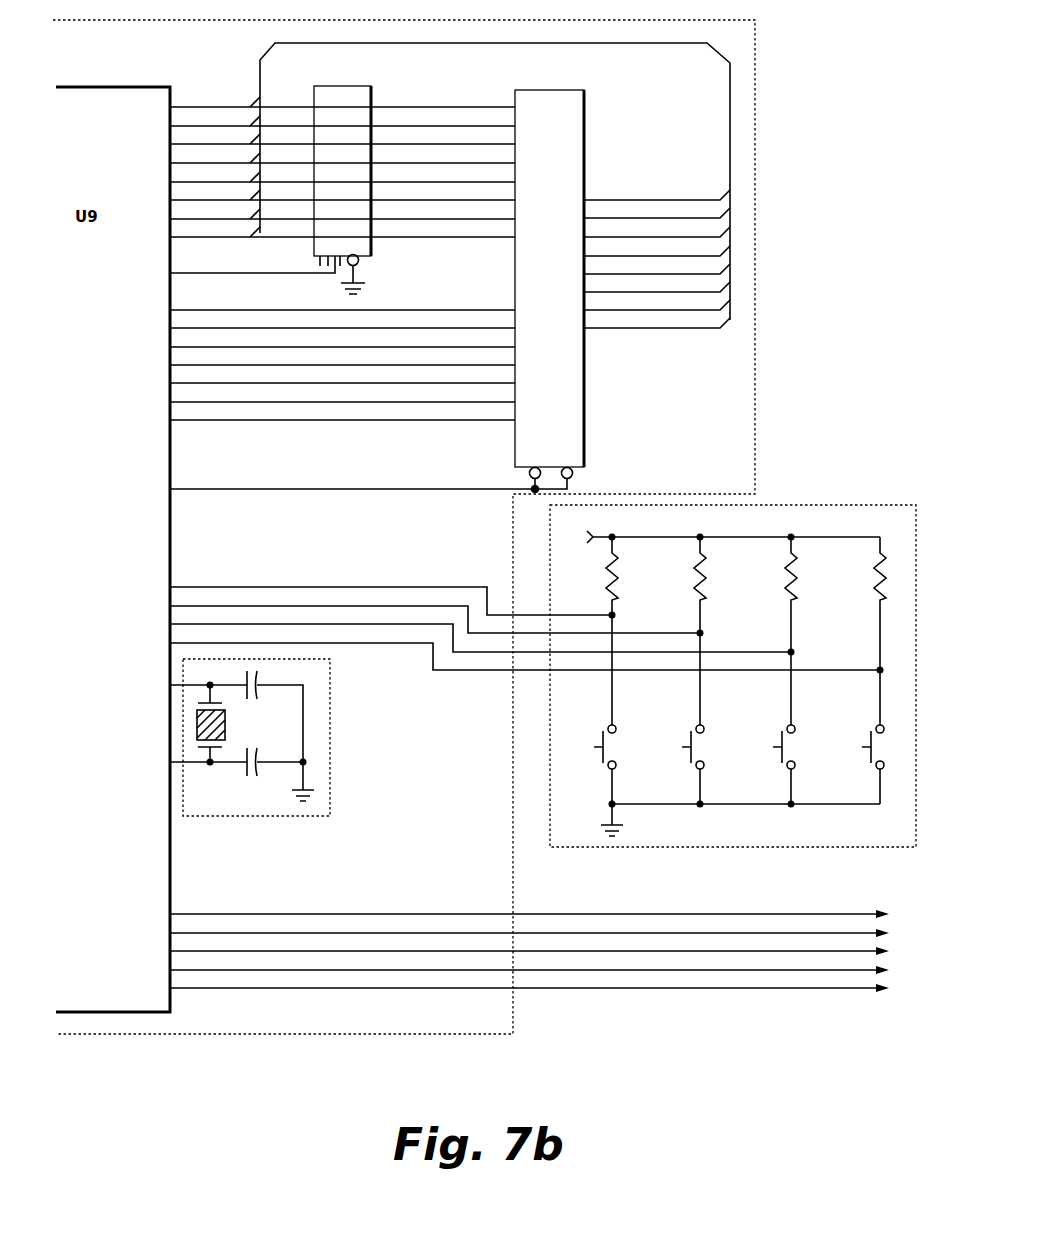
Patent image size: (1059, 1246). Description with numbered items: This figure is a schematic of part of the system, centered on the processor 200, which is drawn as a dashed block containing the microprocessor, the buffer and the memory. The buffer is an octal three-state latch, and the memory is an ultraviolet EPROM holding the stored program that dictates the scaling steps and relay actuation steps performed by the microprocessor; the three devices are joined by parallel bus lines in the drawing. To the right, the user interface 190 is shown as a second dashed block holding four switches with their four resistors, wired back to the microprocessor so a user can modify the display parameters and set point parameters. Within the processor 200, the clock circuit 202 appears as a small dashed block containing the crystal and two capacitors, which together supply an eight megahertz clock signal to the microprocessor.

The processor 200 is at (755, 95).
The user interface 190 is at (800, 503).
The clock circuit 202 is at (330, 772).